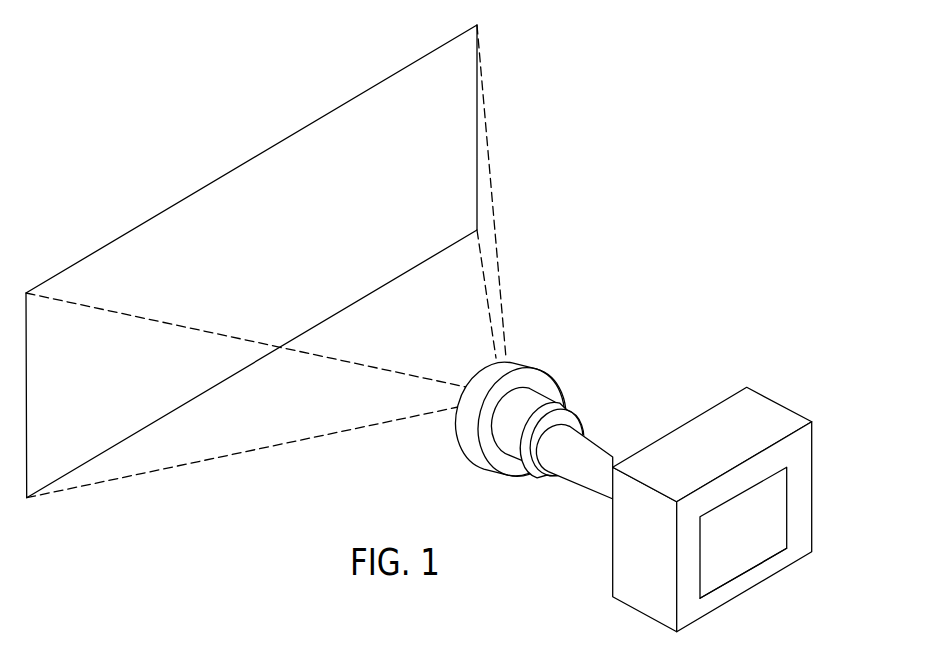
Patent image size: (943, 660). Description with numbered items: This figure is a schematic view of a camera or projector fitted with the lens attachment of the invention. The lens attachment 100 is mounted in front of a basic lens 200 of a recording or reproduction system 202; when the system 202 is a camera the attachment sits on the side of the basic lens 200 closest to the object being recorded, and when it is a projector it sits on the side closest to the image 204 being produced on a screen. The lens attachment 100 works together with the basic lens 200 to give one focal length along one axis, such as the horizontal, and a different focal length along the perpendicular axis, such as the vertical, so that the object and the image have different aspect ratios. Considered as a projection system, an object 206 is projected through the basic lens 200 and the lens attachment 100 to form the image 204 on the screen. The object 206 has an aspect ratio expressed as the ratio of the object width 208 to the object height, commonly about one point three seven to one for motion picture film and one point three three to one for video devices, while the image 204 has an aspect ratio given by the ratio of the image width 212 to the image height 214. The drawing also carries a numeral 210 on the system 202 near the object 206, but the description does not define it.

The lens attachment 100 is at (666, 471).
The basic lens 200 is at (614, 446).
The recording or reproduction system 202 is at (744, 494).
The image 204 is at (448, 82).
The object 206 is at (762, 513).
The object width 208 is at (743, 573).
The display frame 210 is at (788, 522).
The image width 212 is at (197, 396).
The image height 214 is at (478, 133).